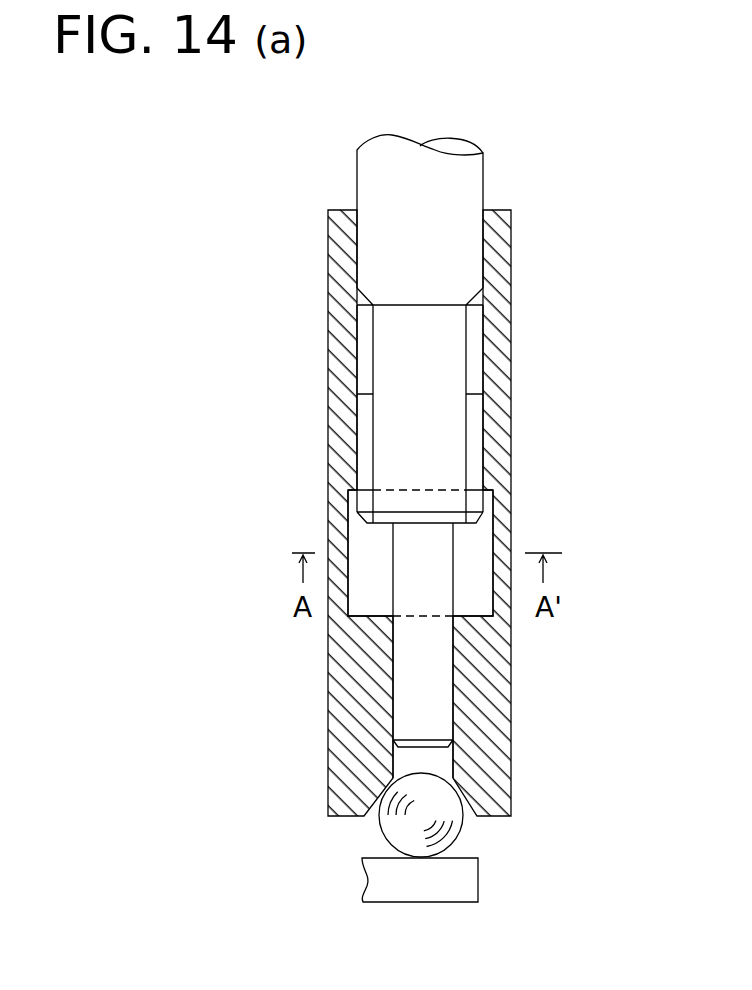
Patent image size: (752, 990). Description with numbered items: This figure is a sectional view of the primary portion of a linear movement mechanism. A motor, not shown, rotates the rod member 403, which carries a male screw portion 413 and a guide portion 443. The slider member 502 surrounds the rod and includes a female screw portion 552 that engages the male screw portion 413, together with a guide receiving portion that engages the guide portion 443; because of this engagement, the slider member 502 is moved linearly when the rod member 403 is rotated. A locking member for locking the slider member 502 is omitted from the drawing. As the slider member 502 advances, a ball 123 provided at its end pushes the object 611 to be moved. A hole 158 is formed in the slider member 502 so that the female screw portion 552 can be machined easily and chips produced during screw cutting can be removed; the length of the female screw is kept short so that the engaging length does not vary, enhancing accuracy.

The rod member 403 is at (382, 189).
The guide portion 443 is at (483, 237).
The slider member 502 is at (340, 390).
The female screw portion 552 is at (474, 437).
The male screw portion 413 is at (357, 500).
The hole 158 is at (476, 542).
The ball 123 is at (448, 808).
The object to be moved 611 is at (458, 880).